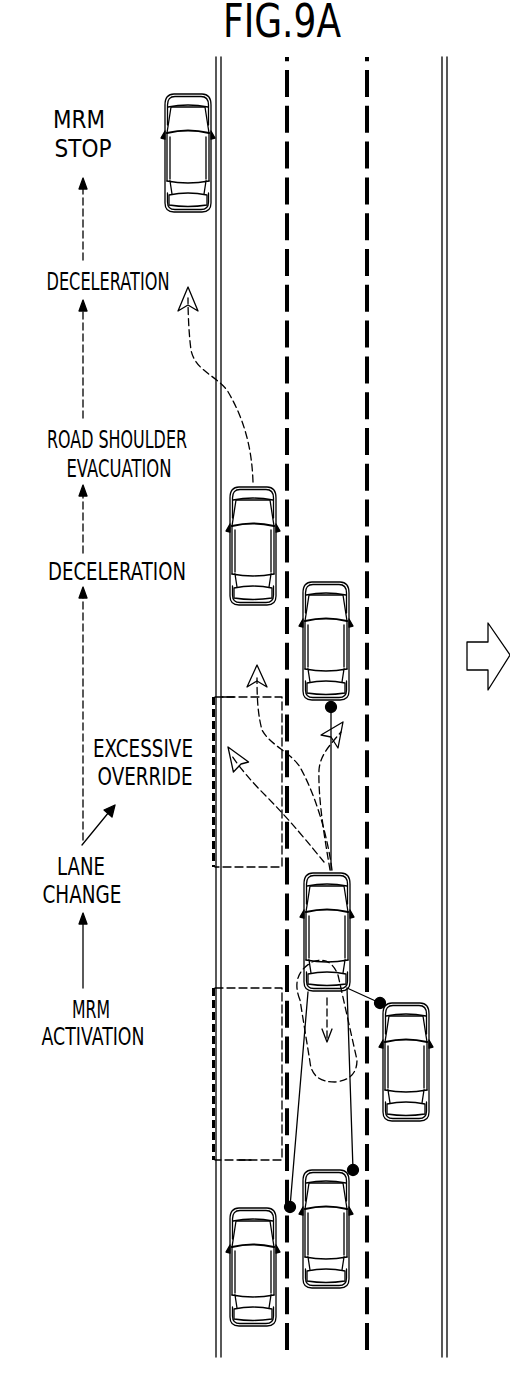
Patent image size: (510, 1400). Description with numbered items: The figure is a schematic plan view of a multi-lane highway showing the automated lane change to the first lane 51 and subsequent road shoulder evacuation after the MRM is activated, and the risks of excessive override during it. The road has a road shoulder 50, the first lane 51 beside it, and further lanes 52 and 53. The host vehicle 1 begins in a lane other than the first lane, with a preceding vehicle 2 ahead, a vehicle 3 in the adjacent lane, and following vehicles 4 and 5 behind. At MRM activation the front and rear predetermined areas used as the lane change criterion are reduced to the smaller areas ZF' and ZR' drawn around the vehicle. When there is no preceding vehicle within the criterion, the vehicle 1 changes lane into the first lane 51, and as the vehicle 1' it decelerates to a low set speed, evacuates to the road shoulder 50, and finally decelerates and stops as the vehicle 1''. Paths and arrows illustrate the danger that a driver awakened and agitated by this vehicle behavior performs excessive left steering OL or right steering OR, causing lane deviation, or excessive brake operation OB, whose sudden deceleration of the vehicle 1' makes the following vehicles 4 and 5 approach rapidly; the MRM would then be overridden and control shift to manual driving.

The vehicle 1 is at (364, 932).
The vehicle 1' is at (295, 546).
The vehicle 1'' is at (216, 153).
The preceding vehicle 2 is at (351, 642).
The vehicle 3 is at (431, 1065).
The following vehicle 4 is at (351, 1230).
The following vehicle 5 is at (230, 1275).
The road shoulder 50 is at (183, 82).
The first lane 51 is at (268, 144).
The lane 52 is at (341, 144).
The lane 53 is at (421, 144).
The predetermined area ZF' is at (192, 657).
The predetermined area ZR' is at (191, 1177).
The excessive left steering OL is at (272, 788).
The excessive right steering OR is at (335, 765).
The excessive brake operation OB is at (297, 997).
The element MRM is at (302, 926).